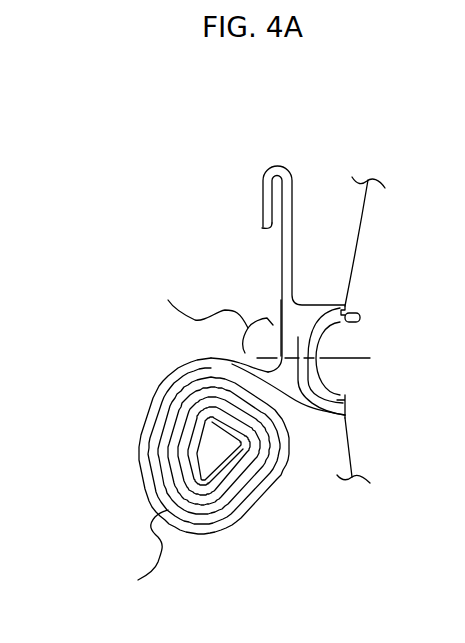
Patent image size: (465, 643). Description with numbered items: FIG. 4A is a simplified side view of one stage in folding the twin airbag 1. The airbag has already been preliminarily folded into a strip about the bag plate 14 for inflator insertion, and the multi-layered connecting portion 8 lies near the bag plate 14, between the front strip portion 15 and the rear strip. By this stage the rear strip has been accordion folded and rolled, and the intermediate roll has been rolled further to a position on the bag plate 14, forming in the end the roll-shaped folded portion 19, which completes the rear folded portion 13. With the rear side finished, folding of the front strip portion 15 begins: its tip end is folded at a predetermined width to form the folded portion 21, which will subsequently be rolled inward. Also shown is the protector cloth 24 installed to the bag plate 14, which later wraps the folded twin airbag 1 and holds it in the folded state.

The twin airbag 1 is at (290, 150).
The multi-layered connecting portion 8 is at (215, 314).
The rear folded portion 13 is at (124, 485).
The bag plate 14 is at (379, 334).
The front strip portion 15 is at (280, 256).
The roll-shaped folded portion 19 is at (138, 557).
The folded portion 21 is at (262, 194).
The protector cloth 24 is at (355, 253).